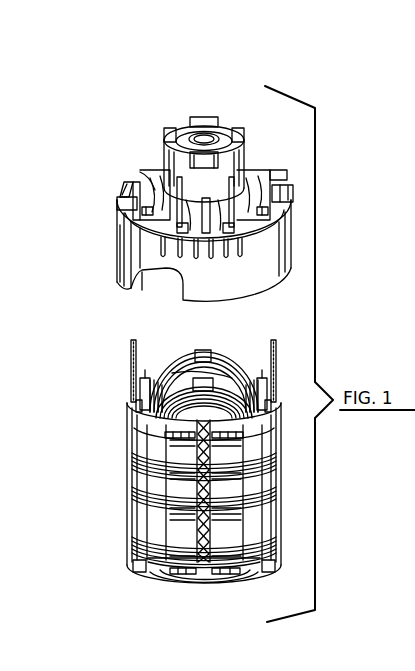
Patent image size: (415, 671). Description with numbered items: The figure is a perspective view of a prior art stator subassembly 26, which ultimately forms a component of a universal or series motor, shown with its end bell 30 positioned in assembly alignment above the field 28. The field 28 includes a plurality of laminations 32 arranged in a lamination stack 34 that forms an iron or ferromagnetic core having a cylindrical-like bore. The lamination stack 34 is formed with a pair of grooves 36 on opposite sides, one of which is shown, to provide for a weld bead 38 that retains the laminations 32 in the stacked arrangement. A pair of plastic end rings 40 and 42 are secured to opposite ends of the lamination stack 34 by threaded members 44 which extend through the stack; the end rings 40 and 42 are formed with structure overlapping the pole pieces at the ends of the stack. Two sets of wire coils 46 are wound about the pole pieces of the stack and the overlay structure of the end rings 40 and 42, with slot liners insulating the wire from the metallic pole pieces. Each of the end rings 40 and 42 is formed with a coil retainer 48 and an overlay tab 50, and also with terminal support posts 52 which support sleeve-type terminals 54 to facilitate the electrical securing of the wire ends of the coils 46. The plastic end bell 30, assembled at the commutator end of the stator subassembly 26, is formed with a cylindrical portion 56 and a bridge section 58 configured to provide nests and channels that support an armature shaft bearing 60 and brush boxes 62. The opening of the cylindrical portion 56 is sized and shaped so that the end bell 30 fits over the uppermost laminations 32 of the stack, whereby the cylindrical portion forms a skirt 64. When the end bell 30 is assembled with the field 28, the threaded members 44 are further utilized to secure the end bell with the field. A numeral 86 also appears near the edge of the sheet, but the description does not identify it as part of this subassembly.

The stator subassembly 26 is at (110, 62).
The field 28 is at (114, 490).
The end bell 30 is at (112, 250).
The laminations 32 is at (126, 545).
The lamination stack 34 is at (113, 517).
The grooves 36 is at (199, 565).
The weld bead 38 is at (194, 548).
The end ring 40 is at (147, 568).
The end ring 42 is at (150, 445).
The threaded members 44 is at (130, 345).
The wire coils 46 is at (226, 362).
The coil retainer 48 is at (172, 373).
The overlay tab 50 is at (200, 302).
The terminal support posts 52 is at (147, 428).
The sleeve-type terminals 54 is at (130, 392).
The cylindrical portion 56 is at (126, 262).
The bridge section 58 is at (140, 172).
The armature shaft bearing 60 is at (222, 133).
The brush boxes 62 is at (292, 186).
The skirt 64 is at (142, 290).
The lead (adjacent figure) 86 is at (414, 424).